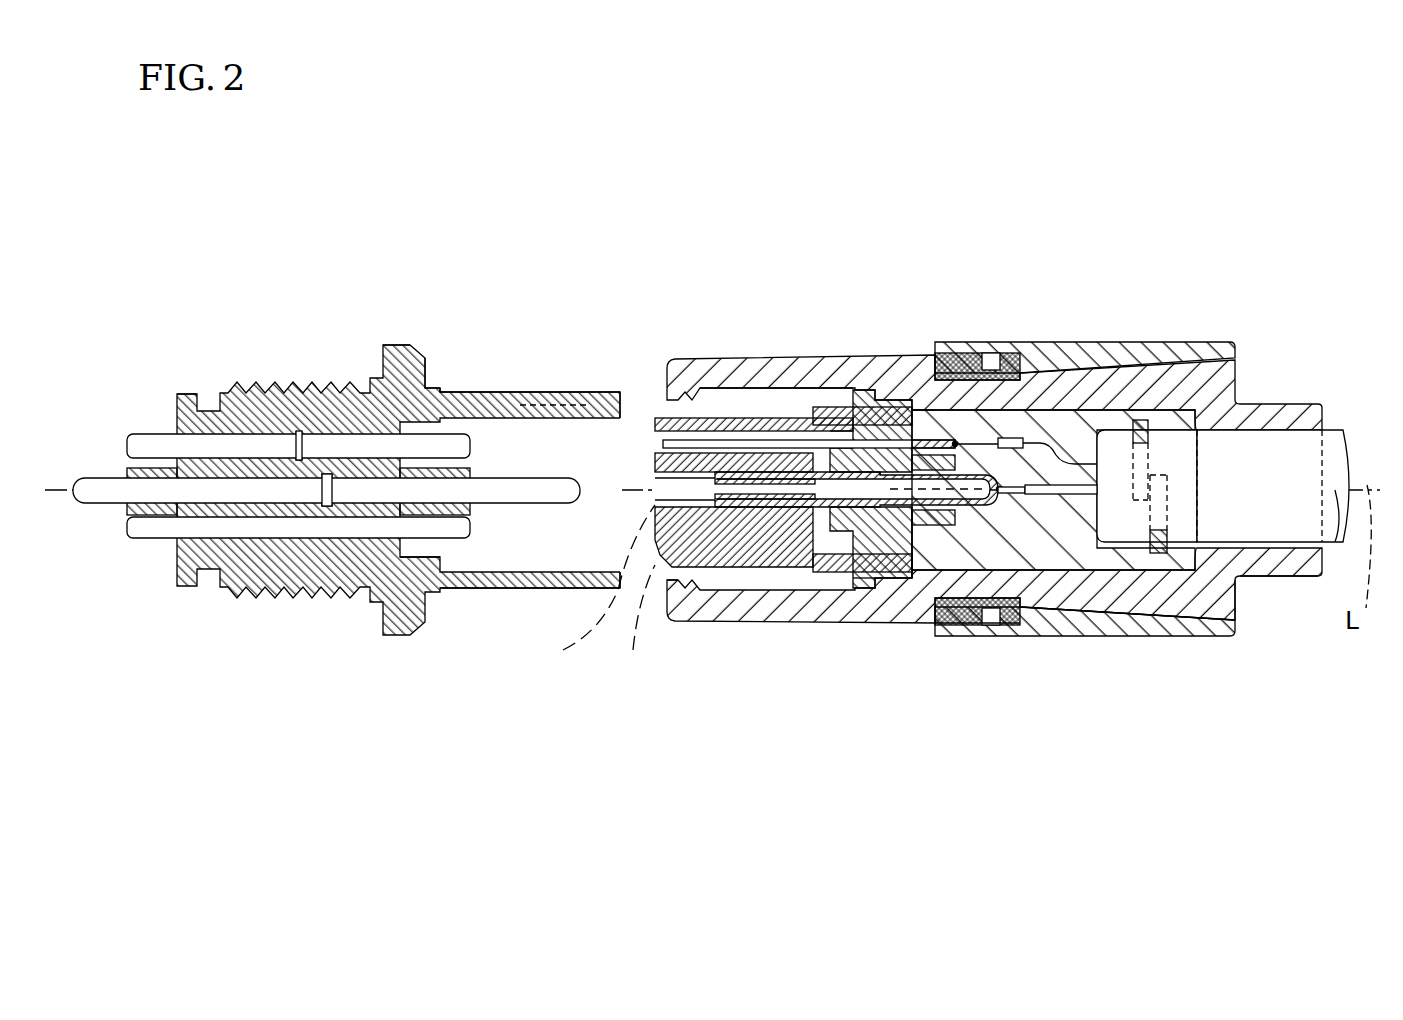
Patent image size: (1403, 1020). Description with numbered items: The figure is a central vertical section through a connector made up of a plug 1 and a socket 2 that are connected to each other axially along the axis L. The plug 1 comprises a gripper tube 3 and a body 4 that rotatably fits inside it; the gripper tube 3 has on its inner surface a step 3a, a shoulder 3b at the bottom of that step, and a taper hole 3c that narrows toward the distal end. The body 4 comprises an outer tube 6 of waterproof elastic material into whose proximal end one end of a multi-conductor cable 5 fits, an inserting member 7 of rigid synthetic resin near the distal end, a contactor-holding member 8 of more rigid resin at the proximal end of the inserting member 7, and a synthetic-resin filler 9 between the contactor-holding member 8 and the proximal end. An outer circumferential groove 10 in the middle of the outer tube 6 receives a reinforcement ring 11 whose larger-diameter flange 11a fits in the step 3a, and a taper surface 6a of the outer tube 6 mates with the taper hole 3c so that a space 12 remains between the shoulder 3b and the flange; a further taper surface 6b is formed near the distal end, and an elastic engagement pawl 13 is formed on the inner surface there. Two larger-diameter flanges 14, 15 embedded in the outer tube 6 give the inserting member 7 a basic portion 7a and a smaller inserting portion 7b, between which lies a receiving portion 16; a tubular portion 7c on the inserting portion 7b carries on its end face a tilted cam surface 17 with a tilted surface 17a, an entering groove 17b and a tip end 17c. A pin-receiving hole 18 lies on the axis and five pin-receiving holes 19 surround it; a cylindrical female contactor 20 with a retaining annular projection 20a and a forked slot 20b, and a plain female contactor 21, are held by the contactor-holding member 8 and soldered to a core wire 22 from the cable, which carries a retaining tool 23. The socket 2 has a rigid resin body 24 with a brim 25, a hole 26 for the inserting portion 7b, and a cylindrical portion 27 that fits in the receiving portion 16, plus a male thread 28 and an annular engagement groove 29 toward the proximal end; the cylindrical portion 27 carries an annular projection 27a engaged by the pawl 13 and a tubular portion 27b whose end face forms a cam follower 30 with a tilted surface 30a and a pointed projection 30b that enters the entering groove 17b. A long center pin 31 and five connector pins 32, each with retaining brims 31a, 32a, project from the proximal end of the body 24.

The plug 1 is at (1080, 174).
The socket 2 is at (190, 386).
The gripper tube 3 is at (1062, 342).
The step 3a is at (988, 636).
The shoulder 3b is at (1003, 628).
The taper hole 3c is at (1092, 612).
The body 4 is at (802, 216).
The multi-conductor cable 5 is at (1332, 548).
The outer tube 6 is at (905, 355).
The taper surface 6a is at (1152, 618).
The taper surface 6b is at (682, 622).
The inserting member 7 is at (742, 258).
The basic portion 7a is at (878, 407).
The inserting portion 7b is at (765, 418).
The tubular portion 7c is at (840, 407).
The contactor-holding member 8 is at (893, 390).
The filler 9 is at (925, 355).
The outer circumferential groove 10 is at (1015, 353).
The reinforcement ring 11 is at (972, 342).
The larger-diameter flange 11a is at (962, 625).
The space 12 is at (992, 342).
The elastic engagement pawl 13 is at (682, 440).
The larger-diameter flange 14 is at (872, 578).
The larger-diameter flange 15 is at (908, 578).
The receiving portion 16 is at (712, 418).
The tilted cam surface 17 is at (622, 690).
The tilted surface 17a is at (585, 598).
The entering groove 17b is at (796, 388).
The tip end 17c is at (613, 628).
The pin-receiving hole 18 is at (598, 580).
The pin-receiving holes 19 is at (662, 453).
The cylindrical female contactor 20 is at (855, 507).
The retaining annular projection 20a is at (868, 520).
The slot 20b is at (800, 499).
The plain female contactor 21 is at (655, 468).
The core wire 22 is at (1070, 405).
The retaining tool 23 is at (1147, 420).
The body 24 is at (238, 281).
The brim 25 is at (395, 344).
The hole 26 is at (440, 386).
The cylindrical portion 27 is at (460, 388).
The annular projection 27a is at (473, 390).
The tubular portion 27b is at (423, 557).
The male thread 28 is at (298, 388).
The annular engagement groove 29 is at (212, 390).
The cam follower 30 is at (632, 260).
The tilted surface 30a is at (550, 392).
The pointed projection 30b is at (596, 392).
The center pin 31 is at (513, 520).
The retaining brim 31a is at (330, 508).
The connector pins 32 is at (150, 434).
The retaining brims 32a is at (298, 510).